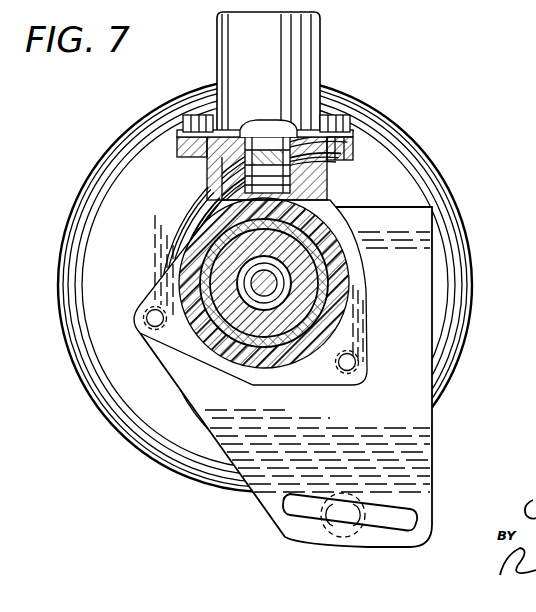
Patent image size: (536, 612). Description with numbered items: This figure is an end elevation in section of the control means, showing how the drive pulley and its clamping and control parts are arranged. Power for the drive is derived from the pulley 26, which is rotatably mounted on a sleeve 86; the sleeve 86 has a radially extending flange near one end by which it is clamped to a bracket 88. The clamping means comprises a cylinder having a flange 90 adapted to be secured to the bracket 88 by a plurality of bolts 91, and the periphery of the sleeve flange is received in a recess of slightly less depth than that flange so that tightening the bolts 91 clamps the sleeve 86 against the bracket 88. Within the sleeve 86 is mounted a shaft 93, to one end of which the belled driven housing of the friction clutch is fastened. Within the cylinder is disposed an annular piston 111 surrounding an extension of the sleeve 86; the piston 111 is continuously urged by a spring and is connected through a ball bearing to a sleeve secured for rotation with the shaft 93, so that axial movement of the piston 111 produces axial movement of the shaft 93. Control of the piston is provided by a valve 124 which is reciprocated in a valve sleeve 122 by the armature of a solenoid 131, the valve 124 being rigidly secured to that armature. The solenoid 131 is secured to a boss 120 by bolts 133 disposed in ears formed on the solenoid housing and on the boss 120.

The pulley 26 is at (112, 422).
The sleeve 86 is at (264, 283).
The bracket 88 is at (428, 447).
The flange 90 is at (318, 378).
The bolts 91 is at (157, 322).
The shaft 93 is at (264, 283).
The annular piston 111 is at (275, 253).
The boss 120 is at (320, 182).
The valve sleeve 122 is at (350, 153).
The valve 124 is at (247, 168).
The solenoid 131 is at (321, 44).
The bolts 133 is at (193, 113).